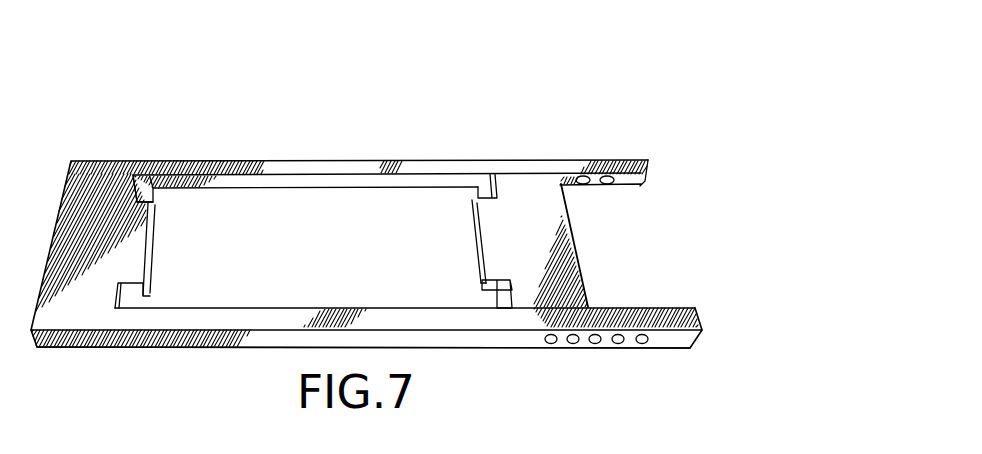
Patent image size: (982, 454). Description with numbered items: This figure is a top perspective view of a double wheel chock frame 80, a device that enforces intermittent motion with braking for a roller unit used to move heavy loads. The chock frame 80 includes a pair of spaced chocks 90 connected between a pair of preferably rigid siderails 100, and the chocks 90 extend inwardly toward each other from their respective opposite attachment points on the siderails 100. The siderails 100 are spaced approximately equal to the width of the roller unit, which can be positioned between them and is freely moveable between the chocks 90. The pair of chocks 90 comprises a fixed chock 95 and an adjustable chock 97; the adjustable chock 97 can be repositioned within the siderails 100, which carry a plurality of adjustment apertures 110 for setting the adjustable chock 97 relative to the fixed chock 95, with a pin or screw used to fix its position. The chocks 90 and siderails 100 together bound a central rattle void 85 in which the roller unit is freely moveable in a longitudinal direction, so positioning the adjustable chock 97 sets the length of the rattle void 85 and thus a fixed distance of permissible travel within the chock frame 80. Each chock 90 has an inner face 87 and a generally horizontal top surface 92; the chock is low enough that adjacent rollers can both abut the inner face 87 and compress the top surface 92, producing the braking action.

The chock frame 80 is at (557, 113).
The rattle void 85 is at (305, 217).
The inner face 87 is at (473, 237).
The chocks 90 is at (146, 195).
The top surface 92 is at (492, 257).
The fixed chock 95 is at (128, 292).
The adjustable chock 97 is at (497, 287).
The siderails 100 is at (417, 168).
The adjustment apertures 110 is at (642, 344).